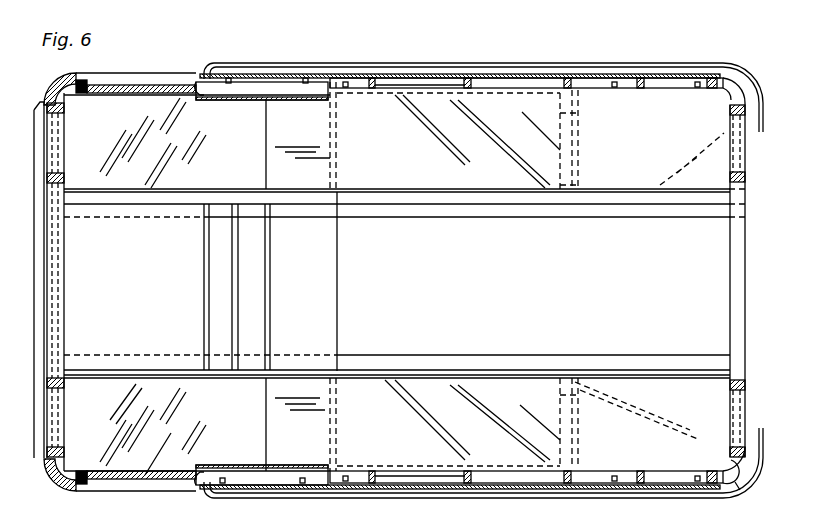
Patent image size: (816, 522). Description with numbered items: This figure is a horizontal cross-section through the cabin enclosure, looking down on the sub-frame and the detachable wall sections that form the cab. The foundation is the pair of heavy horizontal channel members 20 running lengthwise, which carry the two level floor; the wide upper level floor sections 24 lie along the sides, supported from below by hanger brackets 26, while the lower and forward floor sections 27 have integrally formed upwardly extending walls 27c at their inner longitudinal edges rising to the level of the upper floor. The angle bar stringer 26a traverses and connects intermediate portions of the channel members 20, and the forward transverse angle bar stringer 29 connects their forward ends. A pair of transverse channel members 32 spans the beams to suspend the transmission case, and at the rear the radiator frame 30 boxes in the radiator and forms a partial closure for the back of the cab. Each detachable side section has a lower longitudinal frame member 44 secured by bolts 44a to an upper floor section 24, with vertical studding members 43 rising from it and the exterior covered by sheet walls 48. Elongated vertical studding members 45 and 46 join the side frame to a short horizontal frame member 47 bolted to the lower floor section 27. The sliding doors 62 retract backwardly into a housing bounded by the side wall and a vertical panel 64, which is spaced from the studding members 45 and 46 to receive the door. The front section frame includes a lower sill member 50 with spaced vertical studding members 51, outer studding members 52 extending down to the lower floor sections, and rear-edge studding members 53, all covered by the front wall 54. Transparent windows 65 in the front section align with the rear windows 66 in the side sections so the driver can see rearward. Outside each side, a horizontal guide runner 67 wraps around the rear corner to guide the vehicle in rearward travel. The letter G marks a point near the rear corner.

The horizontal channel members 20 is at (510, 206).
The upper level floor sections 24 is at (448, 279).
The hanger brackets 26 is at (580, 160).
The angle bar stringer 26a is at (340, 172).
The lower floor sections 27 is at (215, 286).
The upwardly extending walls 27c is at (222, 198).
The forward transverse angle bar stringer 29 is at (36, 346).
The radiator frame 30 is at (745, 258).
The channel members 32 is at (238, 284).
The vertical studding members 43 is at (712, 90).
The lower longitudinal frame member 44 is at (586, 88).
The bolts 44a is at (698, 82).
The vertical studding member 45 is at (308, 78).
The vertical studding member 46 is at (212, 92).
The short horizontal frame member 47 is at (250, 82).
The walls 48 is at (445, 80).
The lower sill member 50 is at (60, 212).
The vertical studding members 51 is at (56, 176).
The vertical studding members 52 is at (58, 448).
The studding members 53 is at (60, 479).
The front wall 54 is at (62, 90).
The vertical doors 62 is at (122, 86).
The vertical panel 64 is at (275, 98).
The transparent windows 65 is at (56, 141).
The rear windows 66 is at (742, 160).
The horizontal guide runner 67 is at (496, 64).
The gap G is at (738, 484).